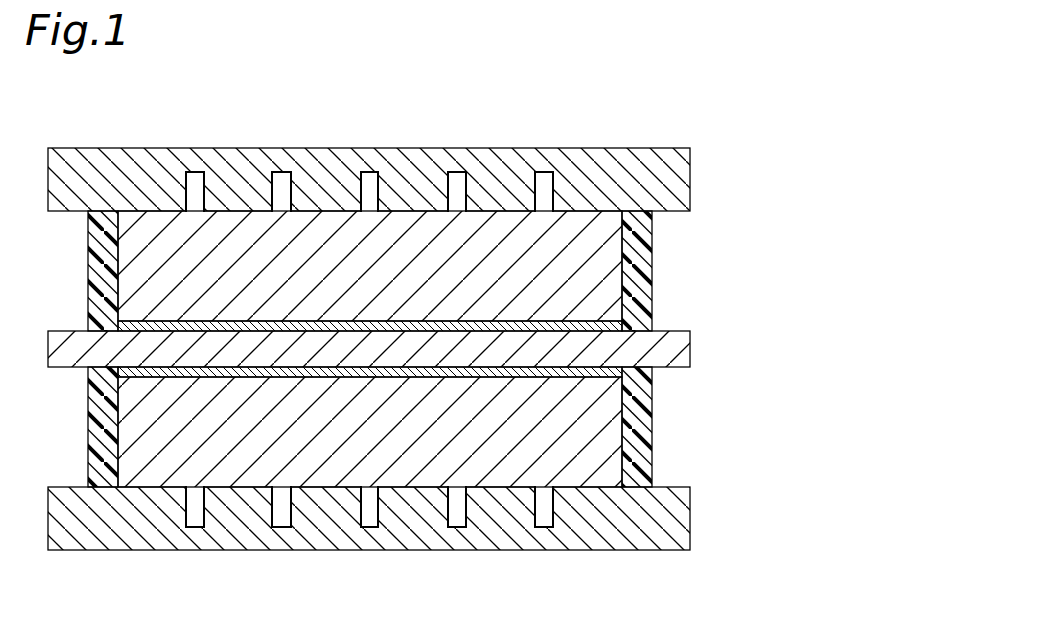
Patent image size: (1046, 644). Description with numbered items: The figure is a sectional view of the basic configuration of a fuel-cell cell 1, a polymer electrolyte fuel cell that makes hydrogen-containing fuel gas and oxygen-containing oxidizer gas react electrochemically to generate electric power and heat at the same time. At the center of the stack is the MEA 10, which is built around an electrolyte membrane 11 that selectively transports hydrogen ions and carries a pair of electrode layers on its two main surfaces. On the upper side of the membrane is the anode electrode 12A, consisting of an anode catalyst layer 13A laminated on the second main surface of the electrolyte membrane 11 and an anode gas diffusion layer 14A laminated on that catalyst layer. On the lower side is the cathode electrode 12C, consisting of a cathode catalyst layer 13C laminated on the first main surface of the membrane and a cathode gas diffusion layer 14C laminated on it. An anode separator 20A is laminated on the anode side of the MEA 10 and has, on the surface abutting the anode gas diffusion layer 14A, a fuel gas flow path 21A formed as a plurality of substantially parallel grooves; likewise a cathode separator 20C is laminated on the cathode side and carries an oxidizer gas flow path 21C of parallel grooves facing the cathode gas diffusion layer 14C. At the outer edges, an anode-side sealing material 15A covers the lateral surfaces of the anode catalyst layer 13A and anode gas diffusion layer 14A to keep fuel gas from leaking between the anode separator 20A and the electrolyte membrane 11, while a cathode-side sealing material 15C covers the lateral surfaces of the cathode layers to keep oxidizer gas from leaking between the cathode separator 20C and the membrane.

The fuel-cell cell 1 is at (465, 352).
The MEA 10 is at (468, 349).
The electrolyte membrane 11 is at (680, 349).
The anode electrode 12A is at (477, 271).
The cathode electrode 12C is at (477, 426).
The anode catalyst layer 13A is at (603, 320).
The cathode catalyst layer 13C is at (605, 375).
The anode gas diffusion layer 14A is at (603, 276).
The cathode gas diffusion layer 14C is at (603, 426).
The anode-side sealing material 15A is at (98, 247).
The cathode-side sealing material 15C is at (98, 420).
The anode separator 20A is at (463, 155).
The cathode separator 20C is at (463, 546).
The fuel gas flow path 21A is at (194, 180).
The oxidizer gas flow path 21C is at (196, 523).